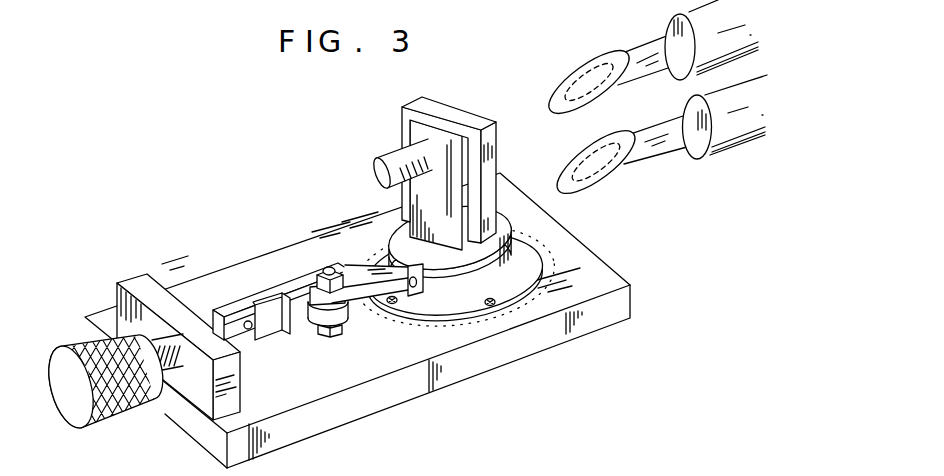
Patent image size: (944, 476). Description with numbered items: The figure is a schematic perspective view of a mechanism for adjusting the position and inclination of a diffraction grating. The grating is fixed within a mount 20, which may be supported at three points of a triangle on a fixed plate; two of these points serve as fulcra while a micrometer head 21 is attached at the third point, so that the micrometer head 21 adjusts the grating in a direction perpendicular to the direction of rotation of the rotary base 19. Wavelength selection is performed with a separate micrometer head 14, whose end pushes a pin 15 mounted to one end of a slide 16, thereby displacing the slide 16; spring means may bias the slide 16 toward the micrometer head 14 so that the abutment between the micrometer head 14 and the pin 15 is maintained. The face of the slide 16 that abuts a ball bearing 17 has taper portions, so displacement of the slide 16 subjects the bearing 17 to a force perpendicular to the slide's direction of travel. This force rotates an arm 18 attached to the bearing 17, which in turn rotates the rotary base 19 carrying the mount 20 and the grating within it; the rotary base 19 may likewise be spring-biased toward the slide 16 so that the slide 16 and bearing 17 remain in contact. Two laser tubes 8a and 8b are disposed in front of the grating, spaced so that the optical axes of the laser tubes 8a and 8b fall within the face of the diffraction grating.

The laser tube 8a is at (637, 47).
The laser tube 8b is at (654, 131).
The micrometer head 14 is at (82, 340).
The pin 15 is at (250, 327).
The slide 16 is at (293, 323).
The ball bearing 17 is at (347, 318).
The arm 18 is at (370, 291).
The rotary base 19 is at (512, 246).
The mount 20 is at (457, 108).
The micrometer head 21 is at (398, 157).